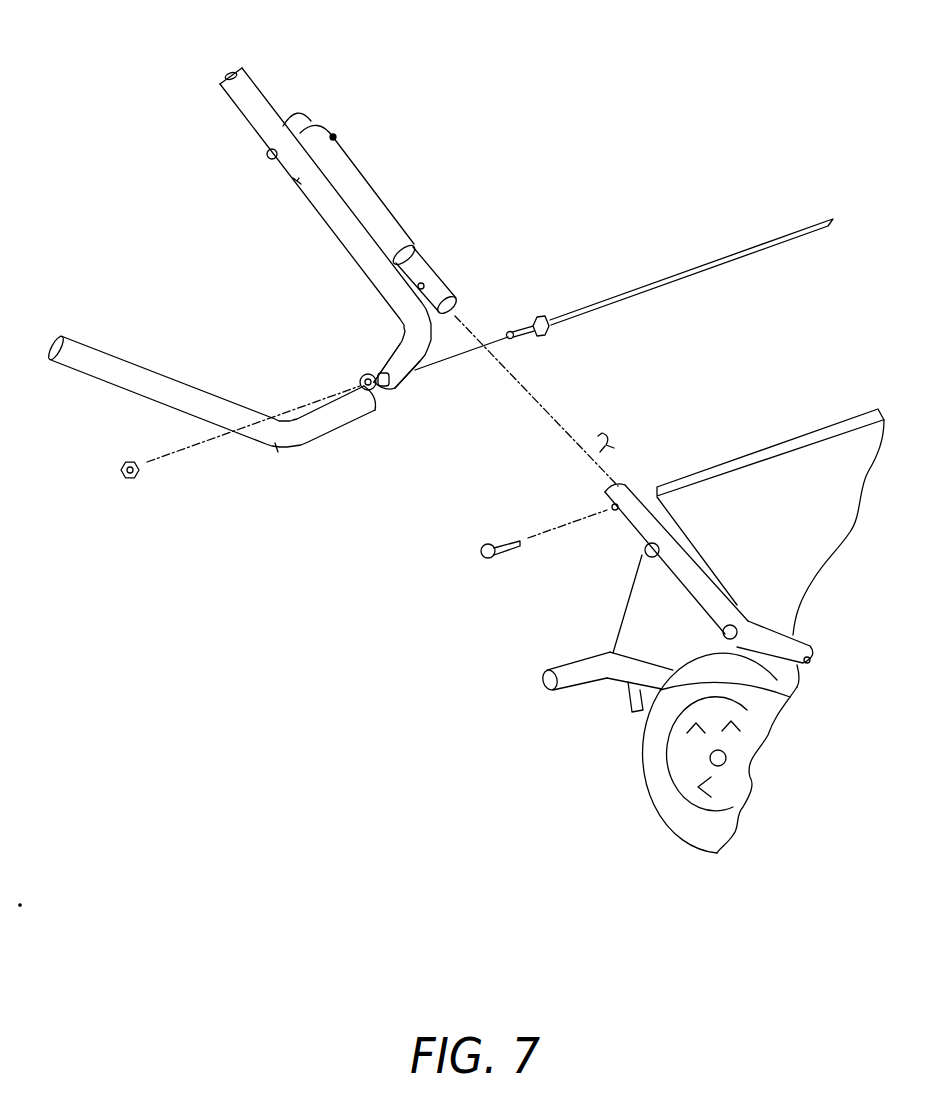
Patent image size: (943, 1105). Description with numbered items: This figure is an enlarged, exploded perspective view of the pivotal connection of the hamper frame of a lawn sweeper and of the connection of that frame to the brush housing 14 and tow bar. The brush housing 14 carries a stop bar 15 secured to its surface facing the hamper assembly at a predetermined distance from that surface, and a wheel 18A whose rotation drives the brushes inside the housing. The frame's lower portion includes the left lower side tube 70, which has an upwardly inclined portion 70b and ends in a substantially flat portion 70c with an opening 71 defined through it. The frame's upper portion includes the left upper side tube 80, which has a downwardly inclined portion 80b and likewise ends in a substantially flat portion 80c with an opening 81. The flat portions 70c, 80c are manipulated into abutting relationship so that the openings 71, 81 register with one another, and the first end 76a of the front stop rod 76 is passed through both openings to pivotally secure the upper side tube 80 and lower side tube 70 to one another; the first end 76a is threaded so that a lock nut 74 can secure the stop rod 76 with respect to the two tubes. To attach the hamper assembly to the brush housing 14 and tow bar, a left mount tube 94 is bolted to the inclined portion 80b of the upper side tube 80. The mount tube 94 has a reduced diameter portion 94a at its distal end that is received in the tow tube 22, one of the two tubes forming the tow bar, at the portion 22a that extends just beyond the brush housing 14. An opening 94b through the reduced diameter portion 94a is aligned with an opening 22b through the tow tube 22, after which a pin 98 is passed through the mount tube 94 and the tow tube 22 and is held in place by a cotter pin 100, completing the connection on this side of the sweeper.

The brush housing 14 is at (817, 453).
The stop bar 15 is at (540, 680).
The wheel 18A is at (707, 837).
The tow tube 22 is at (813, 657).
The portion of tow tube 22a is at (623, 527).
The opening in tow tube 22b is at (603, 500).
The left lower side tube 70 is at (55, 342).
The upwardly inclined portion 70b is at (315, 428).
The substantially flat portion 70c is at (352, 407).
The opening 71 is at (365, 378).
The lock nut 74 is at (133, 480).
The front stop rod 76 is at (673, 277).
The first end of stop rod 76a is at (523, 340).
The left upper side tube 80 is at (230, 77).
The downwardly inclined portion 80b is at (297, 181).
The substantially flat portion 80c is at (383, 367).
The opening 81 is at (393, 387).
The left mount tube 94 is at (362, 186).
The reduced diameter portion 94a is at (417, 262).
The opening in reduced diameter portion 94b is at (440, 283).
The pin 98 is at (488, 563).
The cotter pin 100 is at (612, 443).